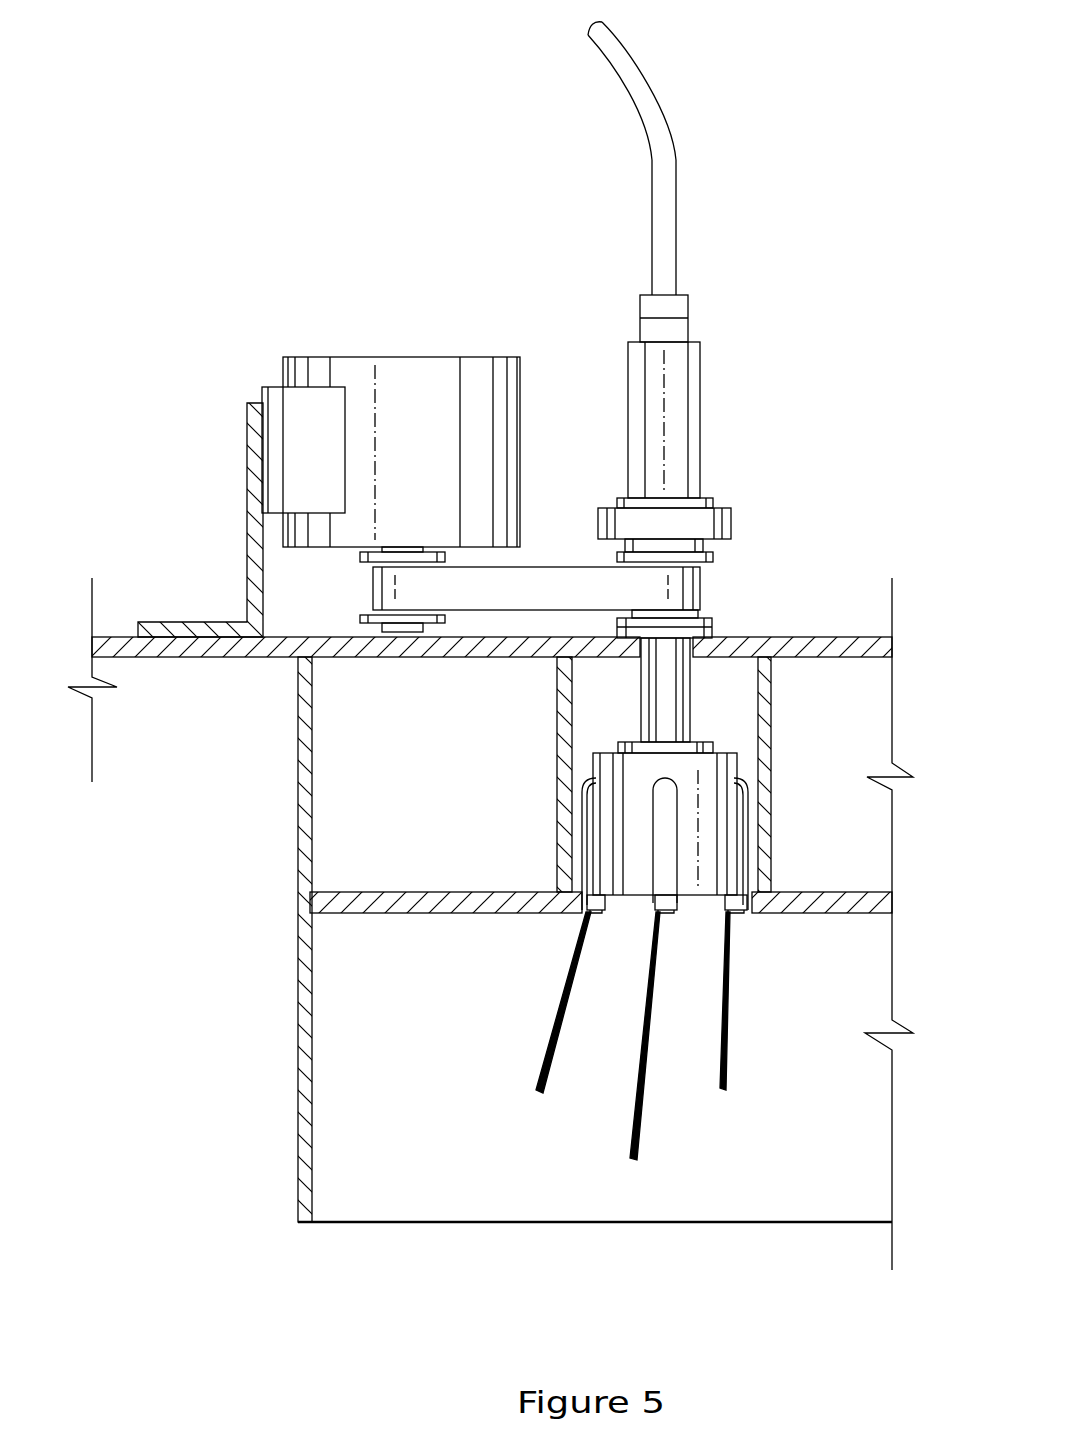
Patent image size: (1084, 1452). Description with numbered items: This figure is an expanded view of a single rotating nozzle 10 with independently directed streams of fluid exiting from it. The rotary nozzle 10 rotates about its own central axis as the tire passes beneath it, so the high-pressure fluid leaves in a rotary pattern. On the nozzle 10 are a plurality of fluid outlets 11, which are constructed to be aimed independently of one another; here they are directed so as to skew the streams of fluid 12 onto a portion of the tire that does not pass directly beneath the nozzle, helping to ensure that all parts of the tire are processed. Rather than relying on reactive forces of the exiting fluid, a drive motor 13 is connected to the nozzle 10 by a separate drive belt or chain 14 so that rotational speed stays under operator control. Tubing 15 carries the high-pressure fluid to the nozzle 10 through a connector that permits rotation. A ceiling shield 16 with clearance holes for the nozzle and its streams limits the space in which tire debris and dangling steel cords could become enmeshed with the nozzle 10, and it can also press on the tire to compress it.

The rotary nozzle 10 is at (707, 777).
The fluid outlets 11 is at (588, 878).
The streams of fluid 12 is at (547, 1048).
The drive motor 13 is at (452, 357).
The drive belt or chain 14 is at (535, 592).
The tubing 15 is at (677, 233).
The ceiling shield 16 is at (852, 890).